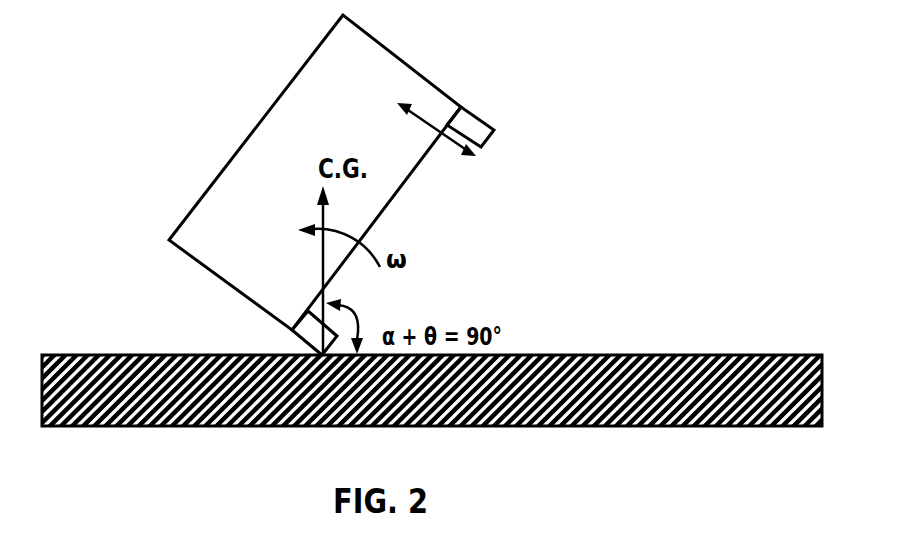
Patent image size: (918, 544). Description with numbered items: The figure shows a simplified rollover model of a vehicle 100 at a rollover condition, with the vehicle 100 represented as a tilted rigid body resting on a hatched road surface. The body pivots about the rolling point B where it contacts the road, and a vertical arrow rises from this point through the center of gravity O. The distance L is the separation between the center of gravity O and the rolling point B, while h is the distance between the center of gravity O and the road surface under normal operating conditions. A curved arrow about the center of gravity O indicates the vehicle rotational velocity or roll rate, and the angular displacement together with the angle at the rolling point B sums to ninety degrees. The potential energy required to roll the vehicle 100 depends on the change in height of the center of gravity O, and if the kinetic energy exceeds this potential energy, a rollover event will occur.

The vehicle 100 is at (423, 73).
The rolling point B is at (298, 333).
The center of gravity O is at (312, 267).
The distance between the center of gravity and rolling point L is at (350, 319).
The distance between the center of gravity and the road surface h is at (462, 158).